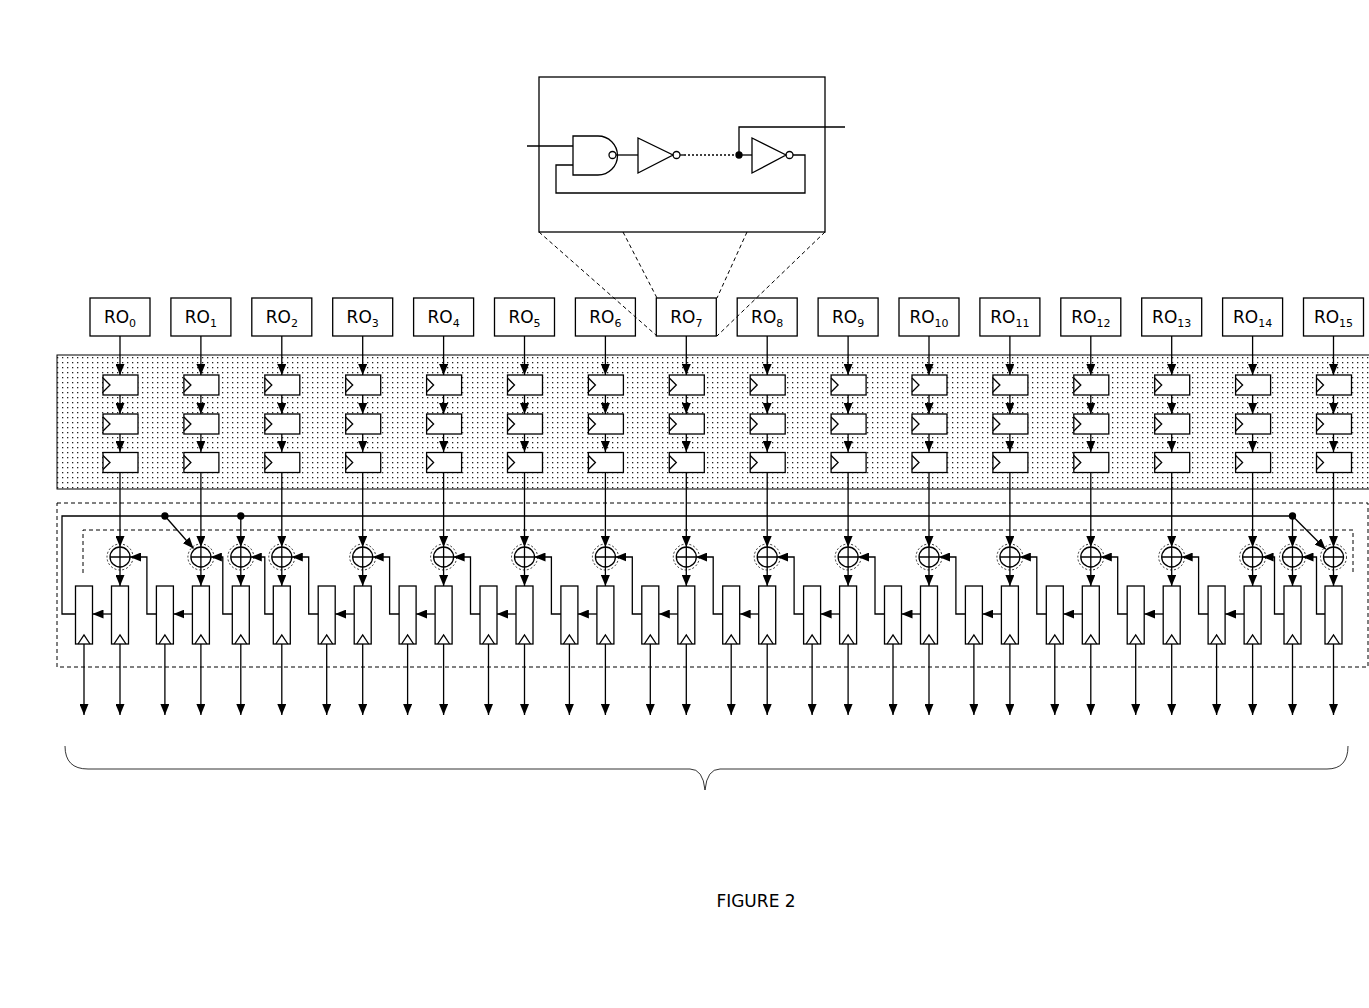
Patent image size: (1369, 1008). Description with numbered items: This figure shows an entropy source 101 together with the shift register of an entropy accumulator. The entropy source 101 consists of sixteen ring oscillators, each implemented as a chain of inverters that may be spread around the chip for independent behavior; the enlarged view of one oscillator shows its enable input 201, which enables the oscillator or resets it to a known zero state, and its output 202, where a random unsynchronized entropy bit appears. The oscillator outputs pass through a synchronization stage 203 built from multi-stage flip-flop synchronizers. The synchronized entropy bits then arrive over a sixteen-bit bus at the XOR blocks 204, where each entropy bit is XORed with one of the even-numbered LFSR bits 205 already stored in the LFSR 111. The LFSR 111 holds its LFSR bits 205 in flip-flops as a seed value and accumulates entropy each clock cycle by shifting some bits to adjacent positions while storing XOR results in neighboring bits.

The entropy source 101 is at (1049, 130).
The enable input 201 is at (518, 159).
The output 202 is at (821, 140).
The synchronization stage 203 is at (65, 355).
The XOR blocks 204 is at (718, 383).
The LFSR bits 205 is at (706, 785).
The LFSR 111 is at (712, 517).